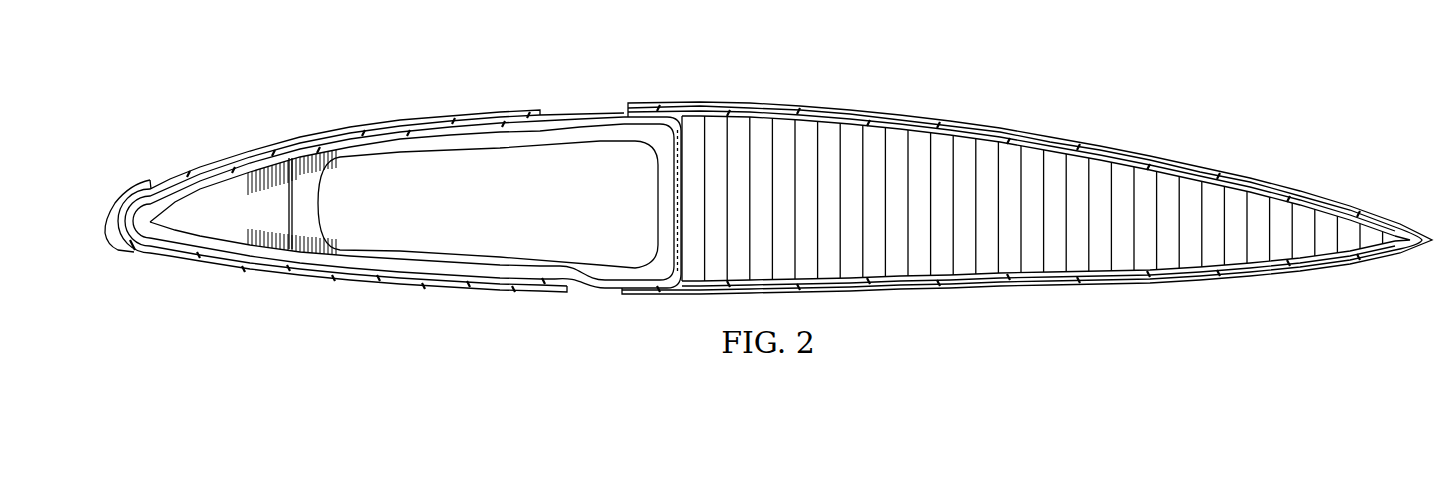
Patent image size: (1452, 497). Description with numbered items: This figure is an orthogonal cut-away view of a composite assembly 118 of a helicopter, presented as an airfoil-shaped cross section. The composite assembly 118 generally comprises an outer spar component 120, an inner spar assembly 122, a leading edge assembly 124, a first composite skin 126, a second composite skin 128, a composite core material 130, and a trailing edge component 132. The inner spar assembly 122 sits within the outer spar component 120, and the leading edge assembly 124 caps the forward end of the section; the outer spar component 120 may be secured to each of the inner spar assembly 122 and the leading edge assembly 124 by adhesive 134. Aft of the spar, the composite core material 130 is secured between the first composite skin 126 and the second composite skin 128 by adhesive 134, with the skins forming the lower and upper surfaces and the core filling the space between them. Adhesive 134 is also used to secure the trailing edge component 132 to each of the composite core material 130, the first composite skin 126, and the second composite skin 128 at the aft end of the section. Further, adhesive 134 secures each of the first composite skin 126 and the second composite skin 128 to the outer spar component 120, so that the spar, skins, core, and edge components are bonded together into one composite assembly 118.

The composite assembly 118 is at (797, 80).
The outer spar component 120 is at (600, 113).
The inner spar assembly 122 is at (333, 207).
The leading edge assembly 124 is at (126, 190).
The first composite skin 126 is at (917, 298).
The second composite skin 128 is at (892, 110).
The composite core material 130 is at (988, 147).
The trailing edge component 132 is at (1399, 236).
The adhesive 134 is at (176, 186).